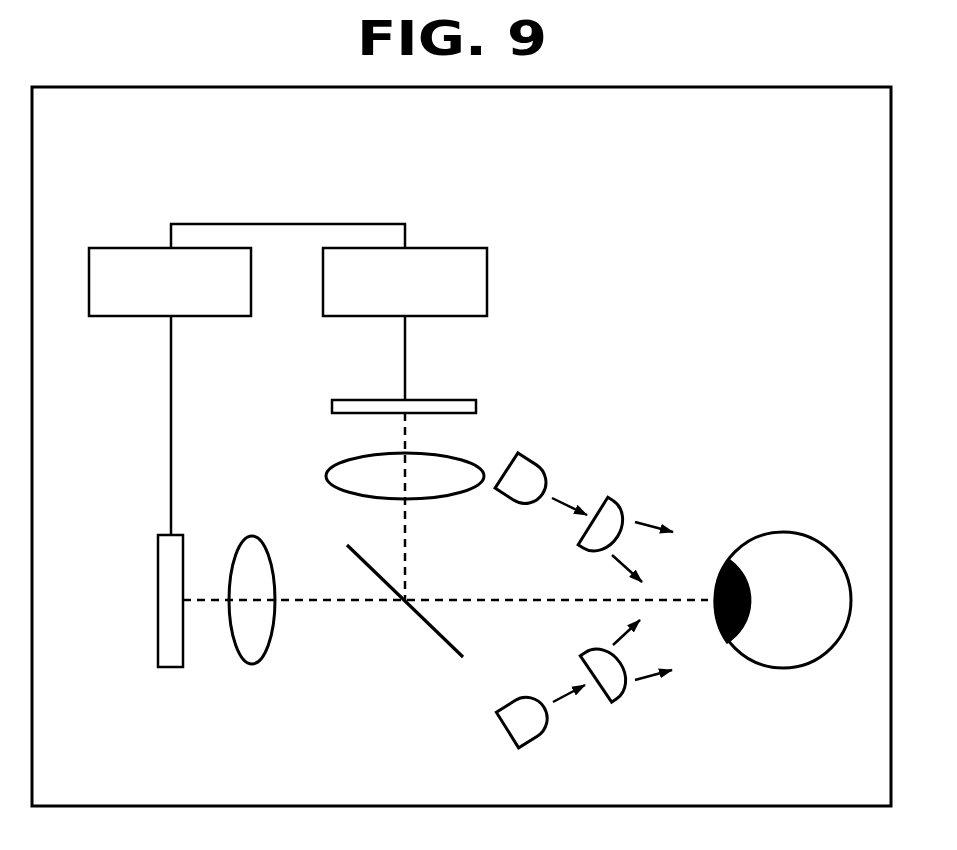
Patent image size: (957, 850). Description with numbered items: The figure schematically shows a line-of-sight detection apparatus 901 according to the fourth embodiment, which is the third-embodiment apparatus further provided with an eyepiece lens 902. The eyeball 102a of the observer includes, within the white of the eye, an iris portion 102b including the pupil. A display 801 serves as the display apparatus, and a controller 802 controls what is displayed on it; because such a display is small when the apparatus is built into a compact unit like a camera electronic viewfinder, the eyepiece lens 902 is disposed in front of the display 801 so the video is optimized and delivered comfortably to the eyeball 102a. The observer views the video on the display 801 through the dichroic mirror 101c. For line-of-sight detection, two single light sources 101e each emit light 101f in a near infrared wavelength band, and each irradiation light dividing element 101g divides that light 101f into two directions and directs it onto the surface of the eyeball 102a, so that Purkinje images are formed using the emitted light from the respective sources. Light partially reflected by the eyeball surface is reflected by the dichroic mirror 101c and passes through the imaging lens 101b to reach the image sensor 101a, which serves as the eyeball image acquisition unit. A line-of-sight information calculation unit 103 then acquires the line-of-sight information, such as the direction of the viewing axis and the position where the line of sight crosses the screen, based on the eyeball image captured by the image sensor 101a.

The line-of-sight detection apparatus 901 is at (152, 173).
The controller 802 is at (119, 248).
The line-of-sight information calculation unit 103 is at (462, 248).
The image sensor 101a is at (332, 406).
The imaging lens 101b is at (327, 476).
The dichroic mirror 101c is at (425, 623).
The single light source 101e is at (535, 460).
The light 101f is at (566, 500).
The irradiation light dividing element 101g is at (641, 523).
The eyeball 102a is at (782, 533).
The iris portion 102b is at (718, 648).
The display 801 is at (158, 568).
The eyepiece lens 902 is at (252, 664).